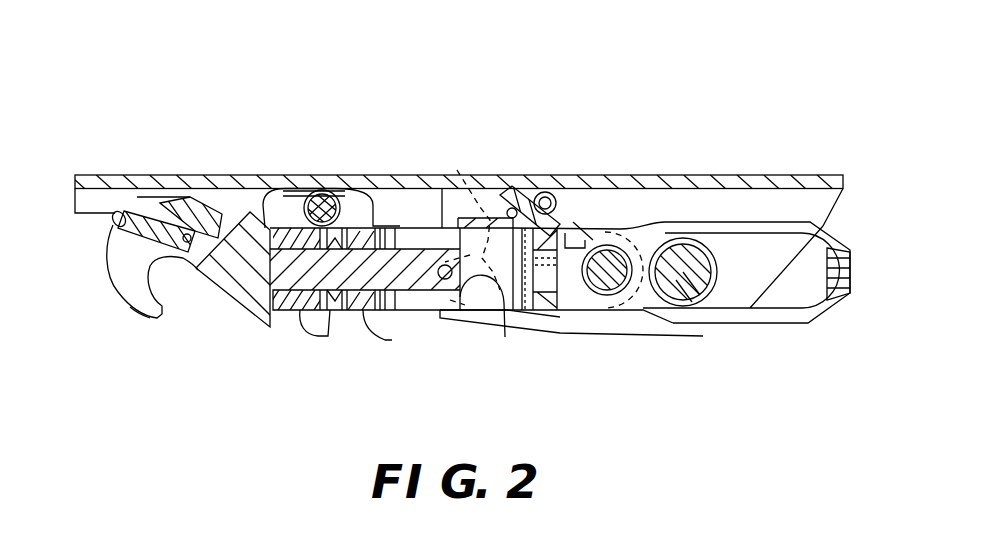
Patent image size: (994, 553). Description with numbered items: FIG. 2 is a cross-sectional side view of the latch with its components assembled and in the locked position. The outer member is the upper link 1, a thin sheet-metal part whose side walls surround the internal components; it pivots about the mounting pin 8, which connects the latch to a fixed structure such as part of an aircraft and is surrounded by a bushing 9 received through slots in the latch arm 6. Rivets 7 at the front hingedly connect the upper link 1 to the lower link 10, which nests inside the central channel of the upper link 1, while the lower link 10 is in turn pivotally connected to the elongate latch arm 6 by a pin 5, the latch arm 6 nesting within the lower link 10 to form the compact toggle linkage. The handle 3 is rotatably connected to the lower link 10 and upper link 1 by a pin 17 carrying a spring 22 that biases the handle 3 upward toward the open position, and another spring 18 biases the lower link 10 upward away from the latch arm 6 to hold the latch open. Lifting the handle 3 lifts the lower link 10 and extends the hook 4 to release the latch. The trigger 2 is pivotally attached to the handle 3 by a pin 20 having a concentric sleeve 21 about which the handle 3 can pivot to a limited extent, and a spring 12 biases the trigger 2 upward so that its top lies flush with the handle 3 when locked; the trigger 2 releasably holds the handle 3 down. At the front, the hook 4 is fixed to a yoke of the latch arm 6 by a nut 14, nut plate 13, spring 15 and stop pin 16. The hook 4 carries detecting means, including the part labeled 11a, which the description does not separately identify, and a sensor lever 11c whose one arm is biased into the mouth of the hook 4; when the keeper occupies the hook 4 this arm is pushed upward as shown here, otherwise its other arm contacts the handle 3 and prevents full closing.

The upper link 1 is at (632, 336).
The trigger 2 is at (228, 200).
The handle 3 is at (203, 175).
The hook 4 is at (138, 298).
The pin 5 is at (617, 253).
The latch arm 6 is at (765, 232).
The rivets 7 is at (450, 170).
The mounting pin 8 is at (687, 305).
The bushing 9 is at (748, 300).
The lower link 10 is at (490, 320).
The clamp pad 11a is at (160, 203).
The sensor lever 11c is at (133, 223).
The spring 12 is at (266, 228).
The nut plate 13 is at (333, 318).
The nut 14 is at (367, 312).
The spring 15 is at (372, 312).
The stop pin 16 is at (505, 320).
The pin 17 is at (545, 192).
The spring 18 is at (583, 303).
The pin 20 is at (316, 191).
The concentric sleeve 21 is at (388, 192).
The spring 22 is at (516, 214).